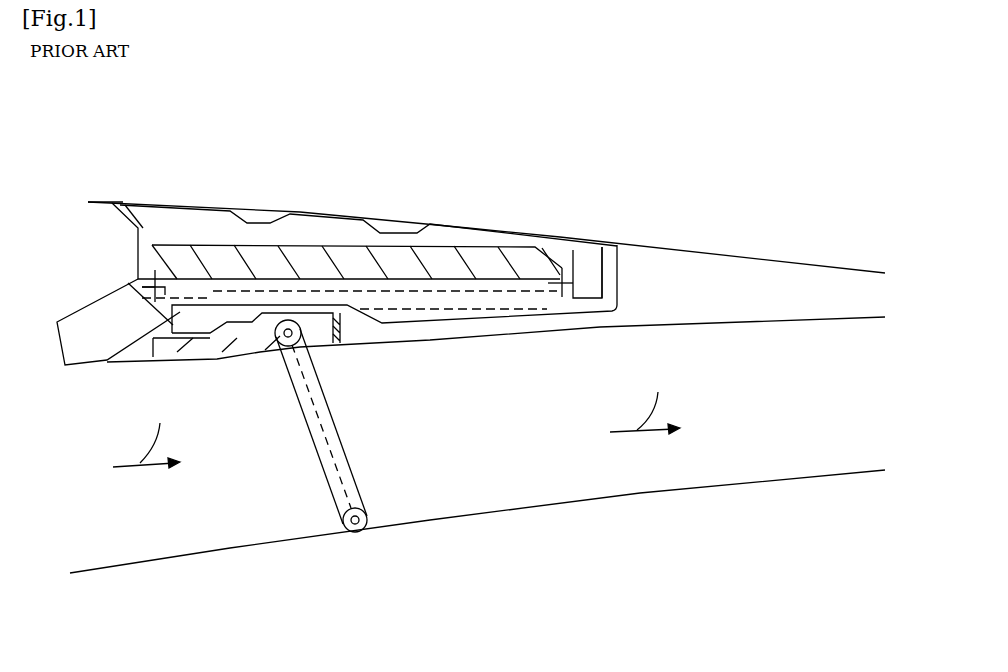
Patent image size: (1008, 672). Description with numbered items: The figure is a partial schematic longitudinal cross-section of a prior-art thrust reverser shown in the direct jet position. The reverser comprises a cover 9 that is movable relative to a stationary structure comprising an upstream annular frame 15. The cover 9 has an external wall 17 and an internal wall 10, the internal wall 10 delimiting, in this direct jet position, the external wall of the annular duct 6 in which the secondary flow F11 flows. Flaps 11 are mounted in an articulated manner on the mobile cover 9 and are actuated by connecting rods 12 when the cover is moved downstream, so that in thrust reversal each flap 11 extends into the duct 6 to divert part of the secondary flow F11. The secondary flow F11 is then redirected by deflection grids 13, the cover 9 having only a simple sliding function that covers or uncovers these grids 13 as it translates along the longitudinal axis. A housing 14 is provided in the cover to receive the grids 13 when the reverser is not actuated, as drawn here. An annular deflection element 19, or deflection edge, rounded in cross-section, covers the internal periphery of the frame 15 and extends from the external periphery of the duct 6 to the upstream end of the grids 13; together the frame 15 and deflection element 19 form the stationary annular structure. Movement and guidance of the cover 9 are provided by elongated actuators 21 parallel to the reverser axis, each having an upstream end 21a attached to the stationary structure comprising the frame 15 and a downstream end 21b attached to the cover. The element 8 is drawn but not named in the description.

The annular duct 6 is at (570, 432).
The inner fixed structure 8 is at (207, 548).
The cover 9 is at (693, 297).
The internal wall 10 is at (745, 323).
The flap 11 is at (210, 348).
The connecting rod 12 is at (343, 480).
The deflection grid 13 is at (353, 266).
The housing 14 is at (485, 305).
The upstream annular frame 15 is at (137, 245).
The external wall 17 is at (500, 230).
The annular deflection element 19 is at (73, 368).
The actuator 21 is at (408, 322).
The upstream end of actuator 21a is at (175, 290).
The downstream end of actuator 21b is at (603, 290).
The secondary flow F11 is at (396, 418).